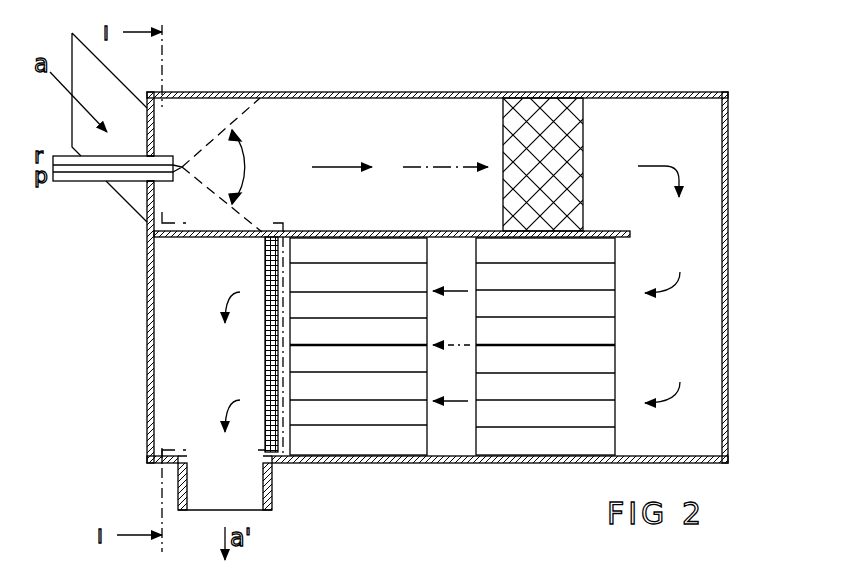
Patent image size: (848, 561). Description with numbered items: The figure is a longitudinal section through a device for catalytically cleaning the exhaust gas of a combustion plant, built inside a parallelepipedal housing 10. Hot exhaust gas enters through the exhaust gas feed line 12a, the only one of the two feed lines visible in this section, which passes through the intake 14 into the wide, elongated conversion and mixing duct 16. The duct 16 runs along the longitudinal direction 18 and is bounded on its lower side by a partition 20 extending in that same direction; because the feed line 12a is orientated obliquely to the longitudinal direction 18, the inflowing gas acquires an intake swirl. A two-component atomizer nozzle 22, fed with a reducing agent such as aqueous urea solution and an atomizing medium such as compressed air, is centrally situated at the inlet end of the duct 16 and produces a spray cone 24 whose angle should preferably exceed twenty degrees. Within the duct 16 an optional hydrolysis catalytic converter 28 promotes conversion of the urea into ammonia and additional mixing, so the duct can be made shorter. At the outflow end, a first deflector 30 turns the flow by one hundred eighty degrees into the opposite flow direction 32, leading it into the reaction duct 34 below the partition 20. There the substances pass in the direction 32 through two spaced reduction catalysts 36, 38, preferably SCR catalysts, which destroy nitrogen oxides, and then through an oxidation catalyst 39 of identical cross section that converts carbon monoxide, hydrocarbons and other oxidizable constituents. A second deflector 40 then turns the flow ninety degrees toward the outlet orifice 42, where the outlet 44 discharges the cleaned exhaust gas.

The housing 10 is at (340, 92).
The exhaust gas feed line 12a is at (118, 197).
The intake 14 is at (159, 107).
The conversion and mixing duct 16 is at (403, 115).
The longitudinal direction 18 is at (458, 165).
The partition 20 is at (443, 230).
The two-component atomizer nozzle 22 is at (165, 157).
The spray cone 24 is at (246, 110).
The hydrolysis catalytic converter 28 is at (547, 133).
The first deflector 30 is at (708, 251).
The opposite flow direction 32 is at (453, 345).
The reaction duct 34 is at (450, 438).
The reduction catalyst 36 is at (545, 438).
The reduction catalyst 38 is at (388, 438).
The oxidation catalyst 39 is at (265, 355).
The second deflector 40 is at (180, 307).
The outlet orifice 42 is at (205, 465).
The outlet 44 is at (272, 495).